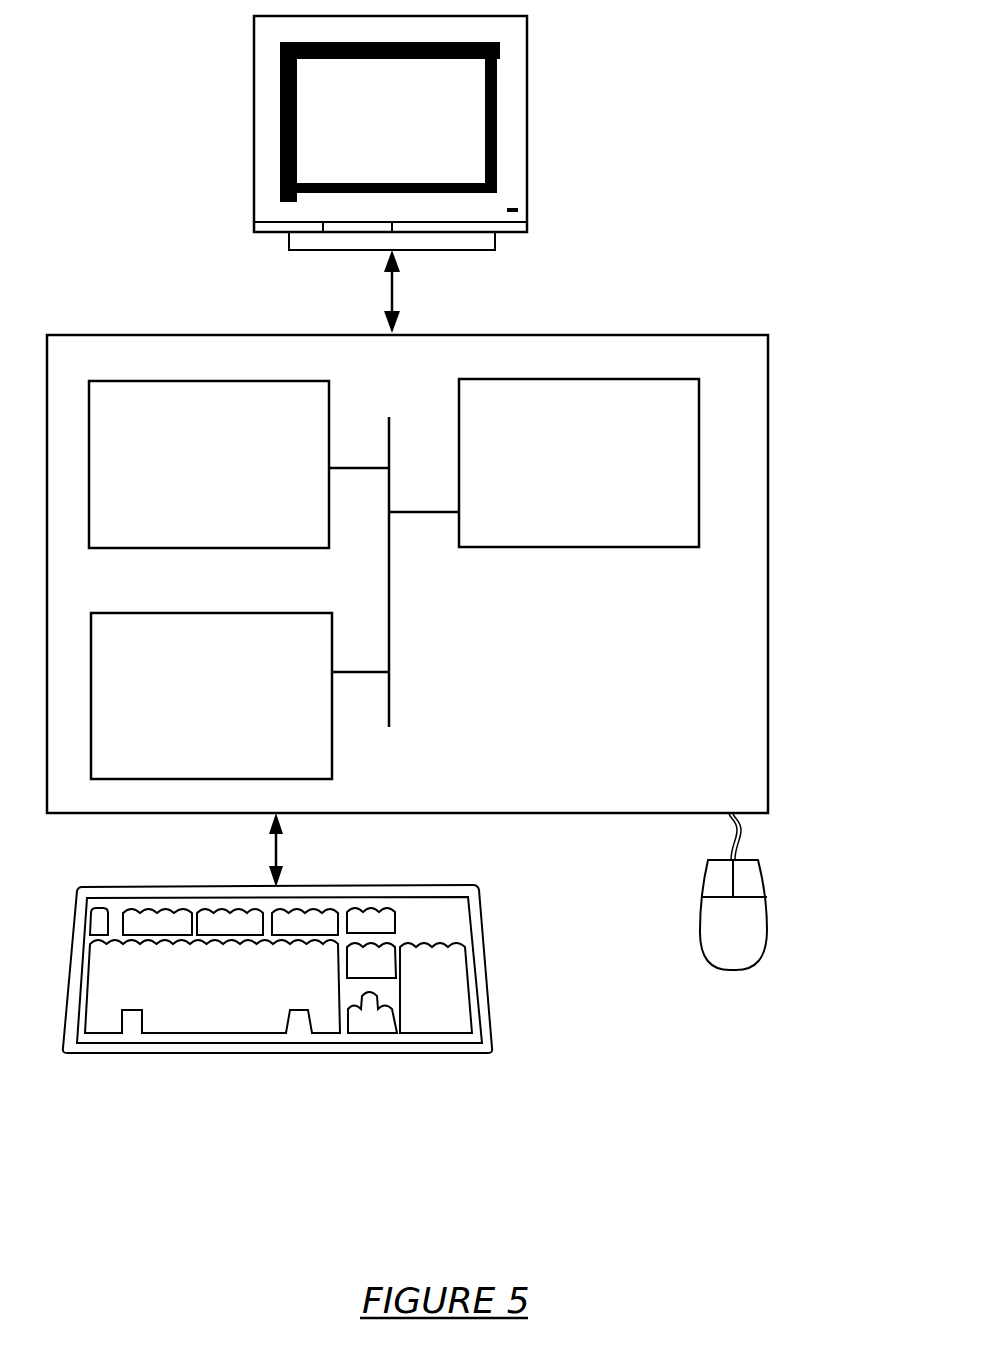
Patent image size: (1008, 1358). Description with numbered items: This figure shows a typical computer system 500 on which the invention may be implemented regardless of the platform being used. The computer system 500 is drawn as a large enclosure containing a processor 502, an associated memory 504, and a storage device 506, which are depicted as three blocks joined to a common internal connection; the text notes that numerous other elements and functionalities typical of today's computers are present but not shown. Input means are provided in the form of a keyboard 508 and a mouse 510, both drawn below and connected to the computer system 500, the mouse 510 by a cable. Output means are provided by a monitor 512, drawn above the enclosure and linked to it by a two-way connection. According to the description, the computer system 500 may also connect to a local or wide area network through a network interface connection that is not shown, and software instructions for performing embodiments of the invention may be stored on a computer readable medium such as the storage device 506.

The computer system 500 is at (786, 179).
The processor 502 is at (559, 475).
The memory 504 is at (187, 477).
The storage device 506 is at (185, 708).
The keyboard 508 is at (192, 998).
The mouse 510 is at (710, 938).
The monitor 512 is at (367, 138).